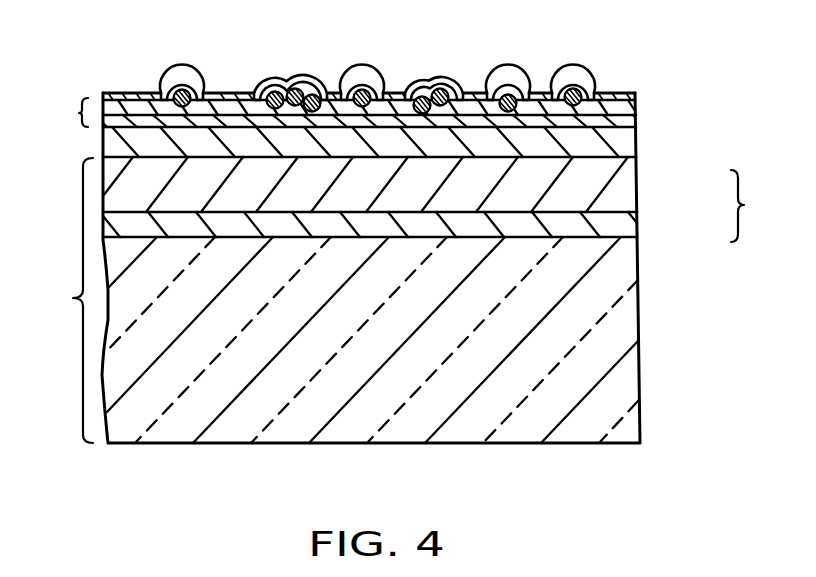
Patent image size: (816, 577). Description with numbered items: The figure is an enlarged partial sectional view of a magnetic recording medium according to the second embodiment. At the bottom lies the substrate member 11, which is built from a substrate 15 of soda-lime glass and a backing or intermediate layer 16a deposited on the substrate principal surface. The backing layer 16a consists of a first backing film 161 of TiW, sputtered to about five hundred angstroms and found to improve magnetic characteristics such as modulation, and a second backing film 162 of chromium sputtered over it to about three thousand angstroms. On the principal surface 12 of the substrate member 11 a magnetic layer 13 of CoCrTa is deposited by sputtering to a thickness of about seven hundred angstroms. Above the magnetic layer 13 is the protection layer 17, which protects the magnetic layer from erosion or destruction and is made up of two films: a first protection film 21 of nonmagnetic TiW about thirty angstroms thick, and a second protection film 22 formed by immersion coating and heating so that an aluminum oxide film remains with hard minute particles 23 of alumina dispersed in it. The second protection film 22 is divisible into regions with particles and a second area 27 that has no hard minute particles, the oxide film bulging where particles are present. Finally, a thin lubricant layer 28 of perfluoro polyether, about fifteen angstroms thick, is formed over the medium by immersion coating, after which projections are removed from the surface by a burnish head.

The substrate member 11 is at (339, 268).
The principal surface 12 is at (371, 160).
The magnetic layer 13 is at (627, 140).
The substrate 15 is at (628, 338).
The first backing film 161 is at (627, 222).
The second backing film 162 is at (628, 188).
The backing layer 16a is at (761, 206).
The protection layer 17 is at (69, 111).
The first protection film 21 is at (637, 122).
The second protection film 22 is at (637, 101).
The hard minute particles 23 is at (423, 92).
The second area 27 is at (472, 98).
The lubricant layer 28 is at (607, 93).